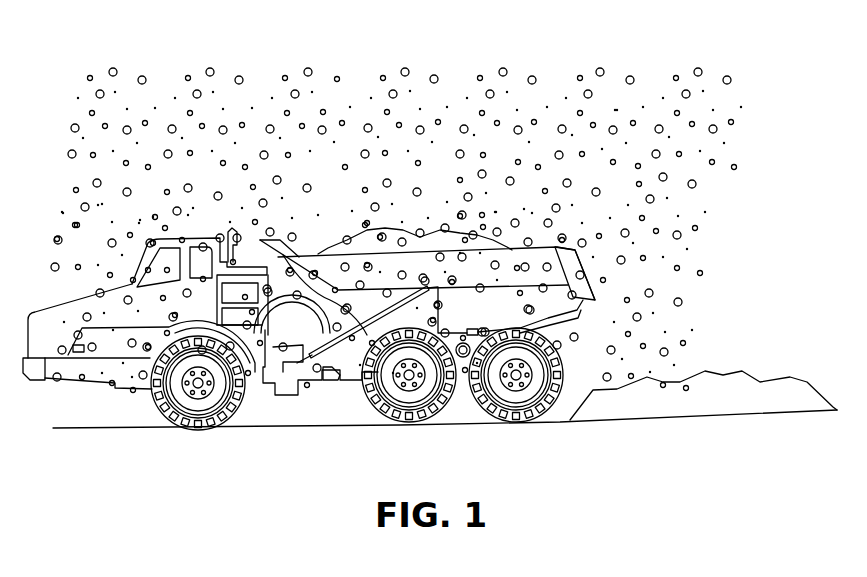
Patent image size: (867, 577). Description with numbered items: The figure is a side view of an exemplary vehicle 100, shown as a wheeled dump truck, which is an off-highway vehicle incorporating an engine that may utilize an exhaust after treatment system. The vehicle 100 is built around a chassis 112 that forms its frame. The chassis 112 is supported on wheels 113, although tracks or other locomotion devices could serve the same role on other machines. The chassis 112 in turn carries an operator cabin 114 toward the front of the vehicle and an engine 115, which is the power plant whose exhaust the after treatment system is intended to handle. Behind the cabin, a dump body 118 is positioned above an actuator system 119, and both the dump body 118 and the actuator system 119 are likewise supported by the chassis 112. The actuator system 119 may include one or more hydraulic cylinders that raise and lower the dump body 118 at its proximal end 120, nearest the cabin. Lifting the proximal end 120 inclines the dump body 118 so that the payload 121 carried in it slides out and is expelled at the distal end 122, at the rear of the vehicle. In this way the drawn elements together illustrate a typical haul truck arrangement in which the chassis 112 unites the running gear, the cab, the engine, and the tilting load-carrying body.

The vehicle 100 is at (93, 421).
The chassis 112 is at (345, 360).
The wheels 113 is at (222, 400).
The operator cabin 114 is at (183, 318).
The engine 115 is at (95, 308).
The dump body 118 is at (457, 320).
The actuator system 119 is at (262, 240).
The proximal end 120 is at (309, 265).
The payload 121 is at (468, 243).
The distal end 122 is at (577, 266).